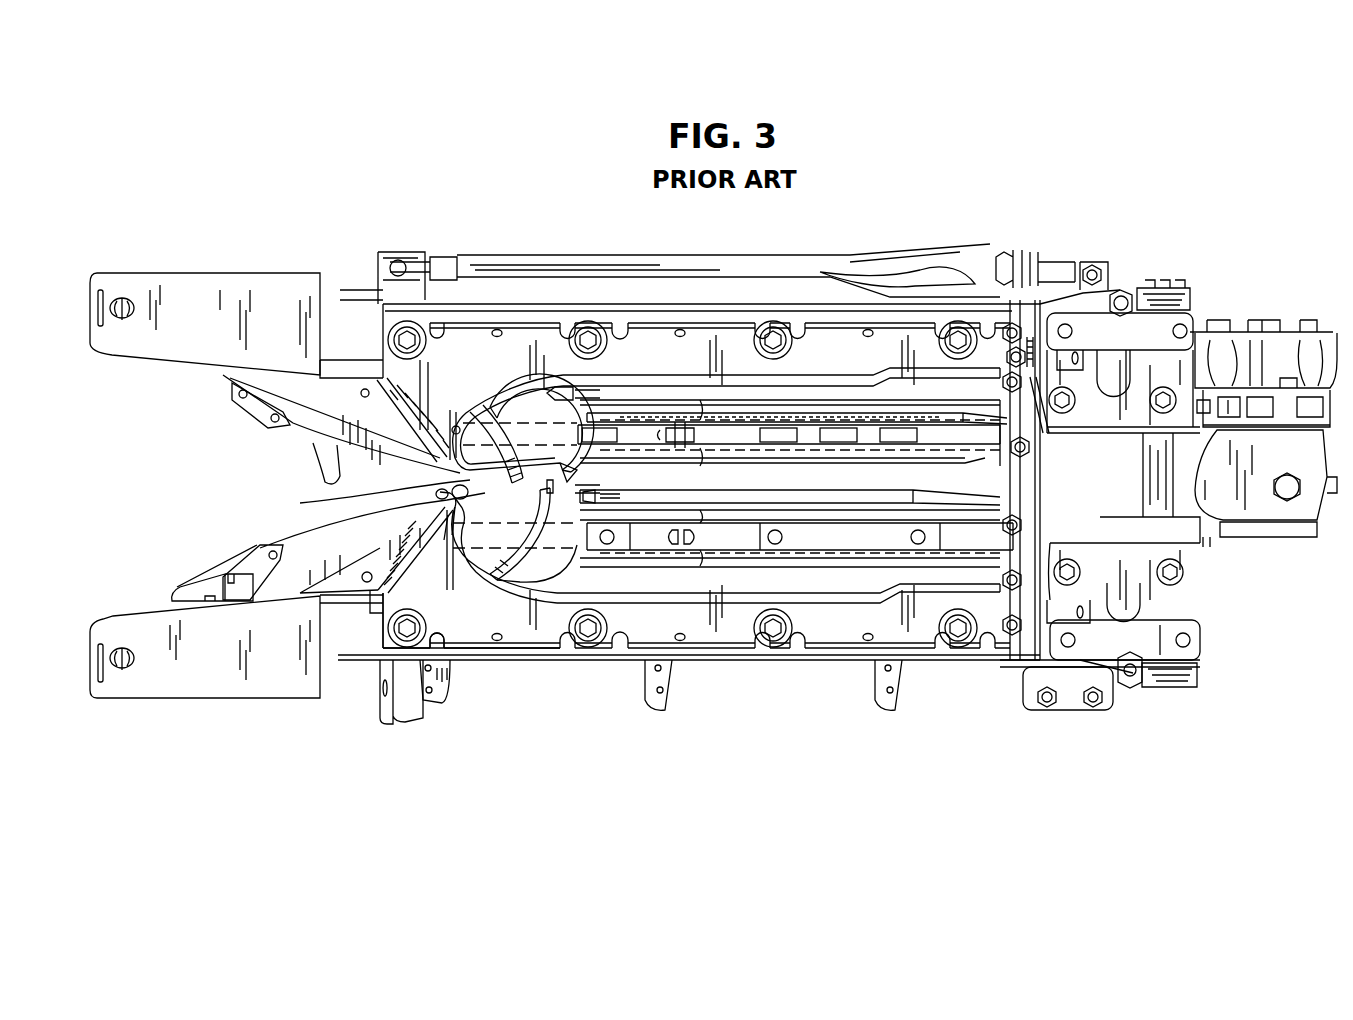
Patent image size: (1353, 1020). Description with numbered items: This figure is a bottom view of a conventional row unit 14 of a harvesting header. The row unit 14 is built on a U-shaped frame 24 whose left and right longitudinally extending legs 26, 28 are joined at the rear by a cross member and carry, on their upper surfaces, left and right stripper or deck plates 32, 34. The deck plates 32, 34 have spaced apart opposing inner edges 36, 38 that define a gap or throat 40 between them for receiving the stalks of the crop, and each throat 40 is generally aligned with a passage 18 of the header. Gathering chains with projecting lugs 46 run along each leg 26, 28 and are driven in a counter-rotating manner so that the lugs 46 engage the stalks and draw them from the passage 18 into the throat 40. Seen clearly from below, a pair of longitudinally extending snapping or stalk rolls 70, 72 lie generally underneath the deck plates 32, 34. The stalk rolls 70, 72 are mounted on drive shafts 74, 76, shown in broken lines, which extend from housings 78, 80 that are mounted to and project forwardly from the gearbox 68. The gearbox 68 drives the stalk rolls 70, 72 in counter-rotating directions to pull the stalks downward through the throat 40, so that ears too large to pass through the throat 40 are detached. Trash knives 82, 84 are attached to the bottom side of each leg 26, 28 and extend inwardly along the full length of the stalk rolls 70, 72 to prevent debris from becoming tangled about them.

The row unit 14 is at (222, 139).
The passage 18 is at (125, 440).
The U-shaped frame 24 is at (265, 262).
The left leg 26 is at (350, 270).
The right leg 28 is at (350, 675).
The left deck plate 32 is at (312, 410).
The right deck plate 34 is at (302, 556).
The inner edge 36 is at (478, 437).
The inner edge 38 is at (452, 515).
The throat 40 is at (408, 487).
The lugs 46 is at (190, 585).
The gearbox 68 is at (1233, 583).
The stalk roll 70 is at (520, 430).
The stalk roll 72 is at (549, 570).
The drive shaft 74 is at (856, 412).
The drive shaft 76 is at (810, 560).
The housing 78 is at (927, 410).
The housing 80 is at (899, 568).
The trash knife 82 is at (455, 345).
The trash knife 84 is at (455, 635).